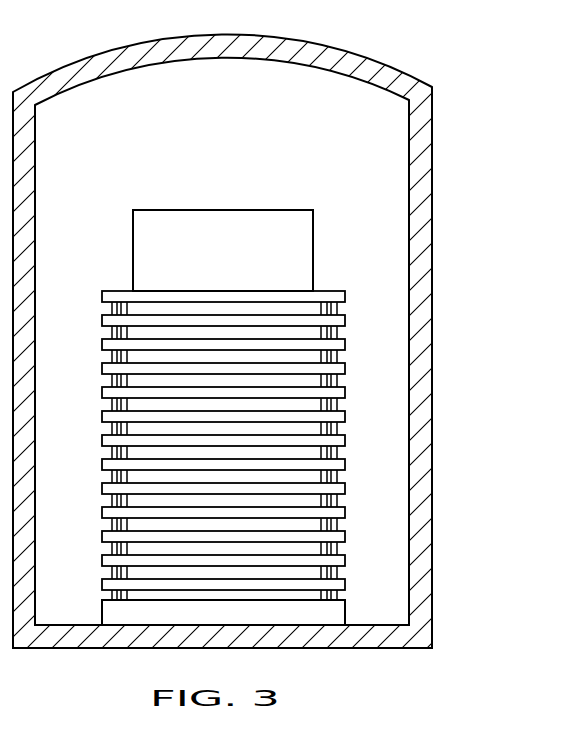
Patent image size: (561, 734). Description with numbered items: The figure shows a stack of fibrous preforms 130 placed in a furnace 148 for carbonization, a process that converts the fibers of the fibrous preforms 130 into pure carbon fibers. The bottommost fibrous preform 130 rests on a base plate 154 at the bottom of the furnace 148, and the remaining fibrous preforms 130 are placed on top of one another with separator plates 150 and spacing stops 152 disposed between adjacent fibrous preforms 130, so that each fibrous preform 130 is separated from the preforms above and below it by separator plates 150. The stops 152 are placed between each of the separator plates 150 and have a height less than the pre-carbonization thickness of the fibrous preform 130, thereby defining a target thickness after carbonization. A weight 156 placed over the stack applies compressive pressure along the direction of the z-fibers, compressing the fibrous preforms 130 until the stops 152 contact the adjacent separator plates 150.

The furnace 148 is at (418, 82).
The weight 156 is at (267, 222).
The base plate 154 is at (330, 612).
The separator plate 150 is at (121, 297).
The stop 152 is at (113, 308).
The fibrous preform 130 is at (310, 310).